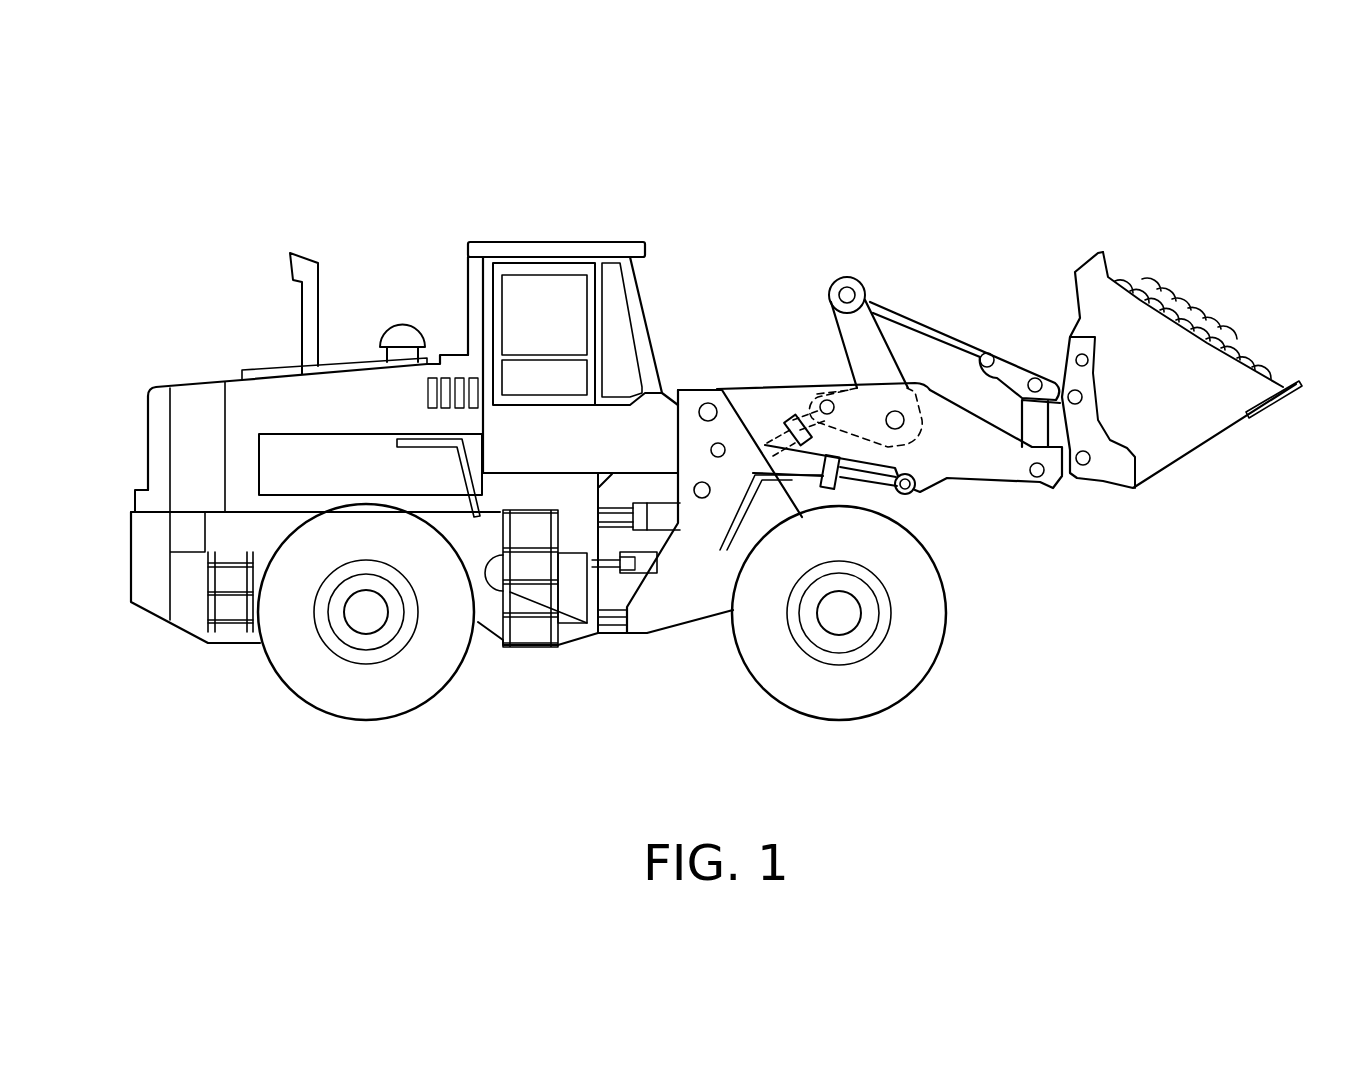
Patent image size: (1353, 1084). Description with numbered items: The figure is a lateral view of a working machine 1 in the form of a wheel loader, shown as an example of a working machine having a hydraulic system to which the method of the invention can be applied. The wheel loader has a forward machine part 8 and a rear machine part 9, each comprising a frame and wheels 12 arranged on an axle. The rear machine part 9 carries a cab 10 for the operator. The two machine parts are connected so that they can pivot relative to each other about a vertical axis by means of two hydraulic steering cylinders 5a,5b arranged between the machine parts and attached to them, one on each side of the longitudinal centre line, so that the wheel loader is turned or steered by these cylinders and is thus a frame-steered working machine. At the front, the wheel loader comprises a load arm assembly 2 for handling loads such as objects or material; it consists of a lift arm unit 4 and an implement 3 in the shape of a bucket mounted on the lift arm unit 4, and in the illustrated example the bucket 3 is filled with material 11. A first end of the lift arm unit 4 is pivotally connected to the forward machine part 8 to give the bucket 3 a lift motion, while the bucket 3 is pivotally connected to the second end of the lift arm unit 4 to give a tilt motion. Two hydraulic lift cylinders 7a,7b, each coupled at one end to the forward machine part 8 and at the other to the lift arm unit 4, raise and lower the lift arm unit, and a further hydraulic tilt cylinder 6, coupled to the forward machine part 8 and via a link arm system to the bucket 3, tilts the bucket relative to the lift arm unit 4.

The working machine 1 is at (423, 168).
The load arm assembly 2 is at (1040, 320).
The implement 3 is at (1167, 425).
The lift arm unit 4 is at (1058, 470).
The lift cylinders 5a,5b is at (868, 485).
The tilt cylinder 6 is at (790, 418).
The steering cylinders 7a,7b is at (663, 520).
The forward machine part 8 is at (662, 605).
The rear machine part 9 is at (188, 612).
The cab 10 is at (553, 247).
The material 11 is at (1197, 312).
The wheels 12 is at (307, 670).